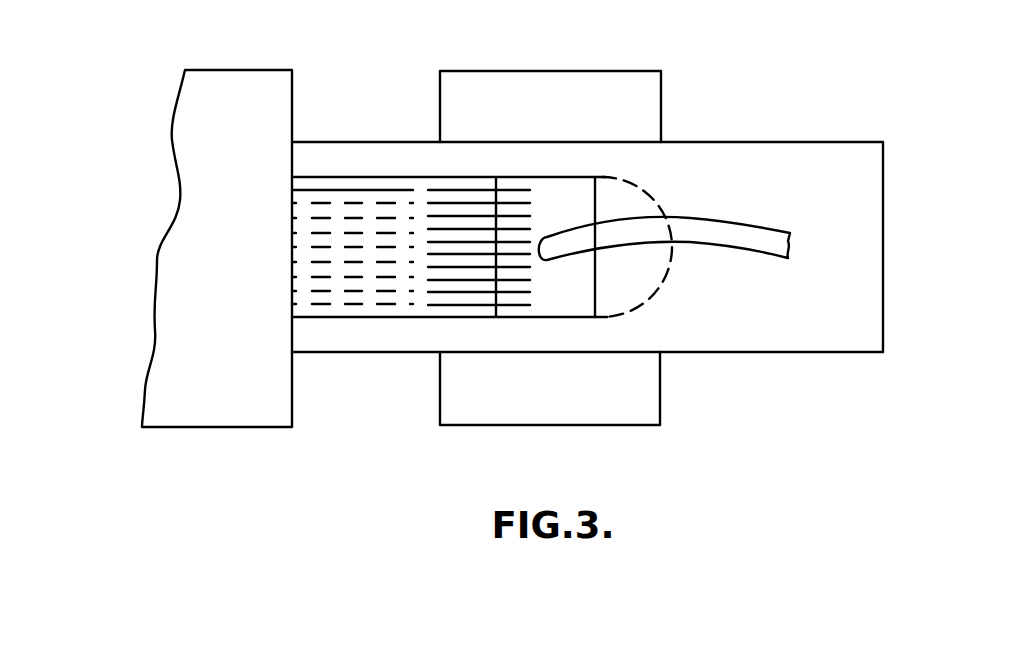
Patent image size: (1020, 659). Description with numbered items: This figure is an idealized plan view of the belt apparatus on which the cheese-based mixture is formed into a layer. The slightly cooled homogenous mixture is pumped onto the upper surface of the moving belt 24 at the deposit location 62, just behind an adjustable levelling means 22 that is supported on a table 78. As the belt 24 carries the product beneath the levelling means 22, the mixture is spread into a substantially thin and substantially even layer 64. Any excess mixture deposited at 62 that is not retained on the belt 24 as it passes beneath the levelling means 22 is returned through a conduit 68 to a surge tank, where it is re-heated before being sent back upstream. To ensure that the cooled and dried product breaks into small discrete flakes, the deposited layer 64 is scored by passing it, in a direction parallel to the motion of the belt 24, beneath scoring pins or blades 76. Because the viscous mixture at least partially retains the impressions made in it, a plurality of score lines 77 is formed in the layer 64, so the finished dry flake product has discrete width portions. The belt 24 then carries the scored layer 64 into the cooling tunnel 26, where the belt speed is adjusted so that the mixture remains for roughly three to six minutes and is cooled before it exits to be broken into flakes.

The levelling means 22 is at (577, 298).
The moving belt 24 is at (753, 160).
The cooling tunnel 26 is at (238, 83).
The deposit location 62 is at (628, 198).
The layer 64 is at (362, 197).
The conduit 68 is at (750, 233).
The scoring pins or blades 76 is at (468, 222).
The score lines 77 is at (345, 280).
The table 78 is at (645, 405).